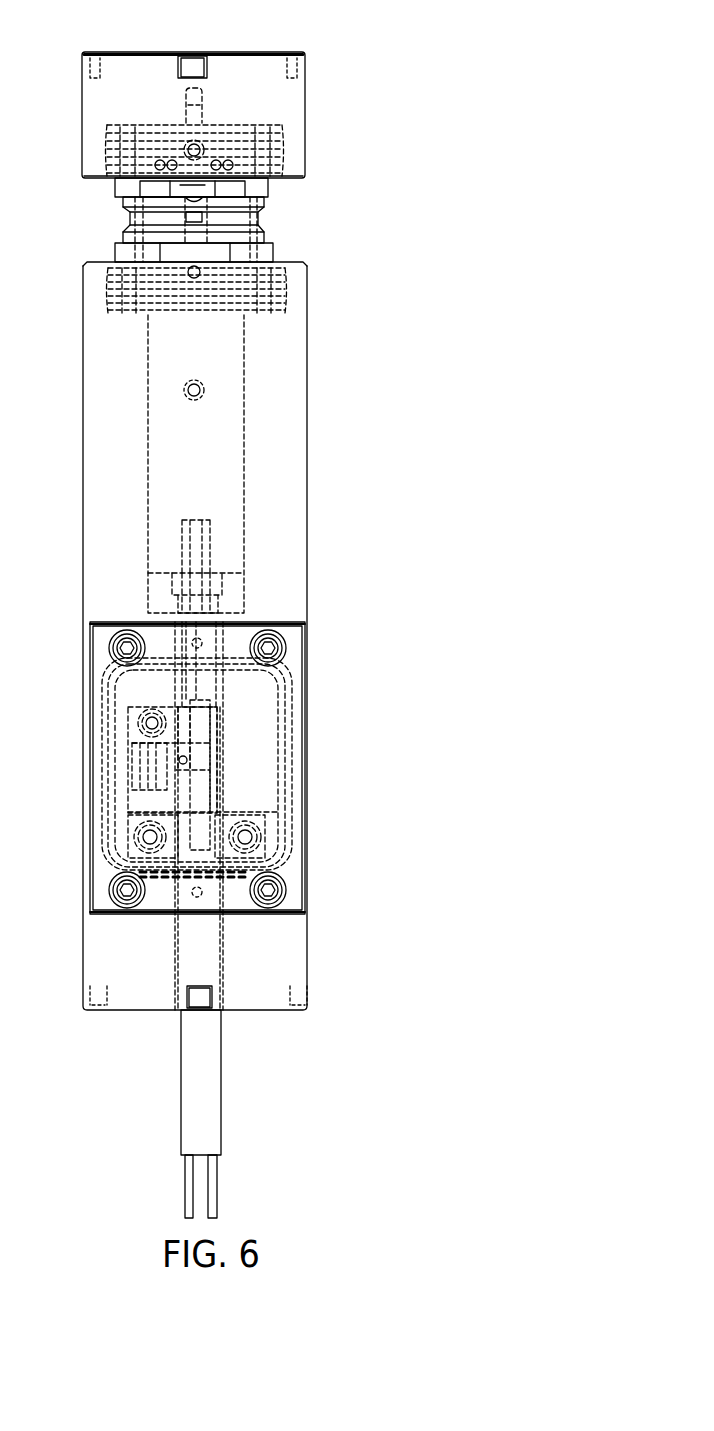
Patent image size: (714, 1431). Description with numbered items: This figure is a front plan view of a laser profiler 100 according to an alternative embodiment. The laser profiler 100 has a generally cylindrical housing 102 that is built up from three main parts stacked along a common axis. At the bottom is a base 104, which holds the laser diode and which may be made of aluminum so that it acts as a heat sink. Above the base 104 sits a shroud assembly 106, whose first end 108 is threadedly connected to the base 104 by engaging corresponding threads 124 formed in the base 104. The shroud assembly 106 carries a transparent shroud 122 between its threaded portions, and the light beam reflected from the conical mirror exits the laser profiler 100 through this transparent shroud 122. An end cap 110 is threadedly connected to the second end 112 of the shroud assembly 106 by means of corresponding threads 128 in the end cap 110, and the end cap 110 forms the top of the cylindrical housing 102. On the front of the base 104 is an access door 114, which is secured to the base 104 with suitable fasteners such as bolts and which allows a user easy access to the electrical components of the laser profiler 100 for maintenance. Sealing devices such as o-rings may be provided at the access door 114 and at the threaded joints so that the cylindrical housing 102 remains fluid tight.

The laser profiler 100 is at (341, 66).
The cylindrical housing 102 is at (360, 329).
The base 104 is at (100, 600).
The shroud assembly 106 is at (98, 246).
The first end 108 is at (293, 258).
The end cap 110 is at (97, 112).
The second end 112 is at (103, 180).
The access door 114 is at (267, 770).
The transparent shroud 122 is at (262, 218).
The threads 124 is at (286, 297).
The threads 128 is at (100, 163).